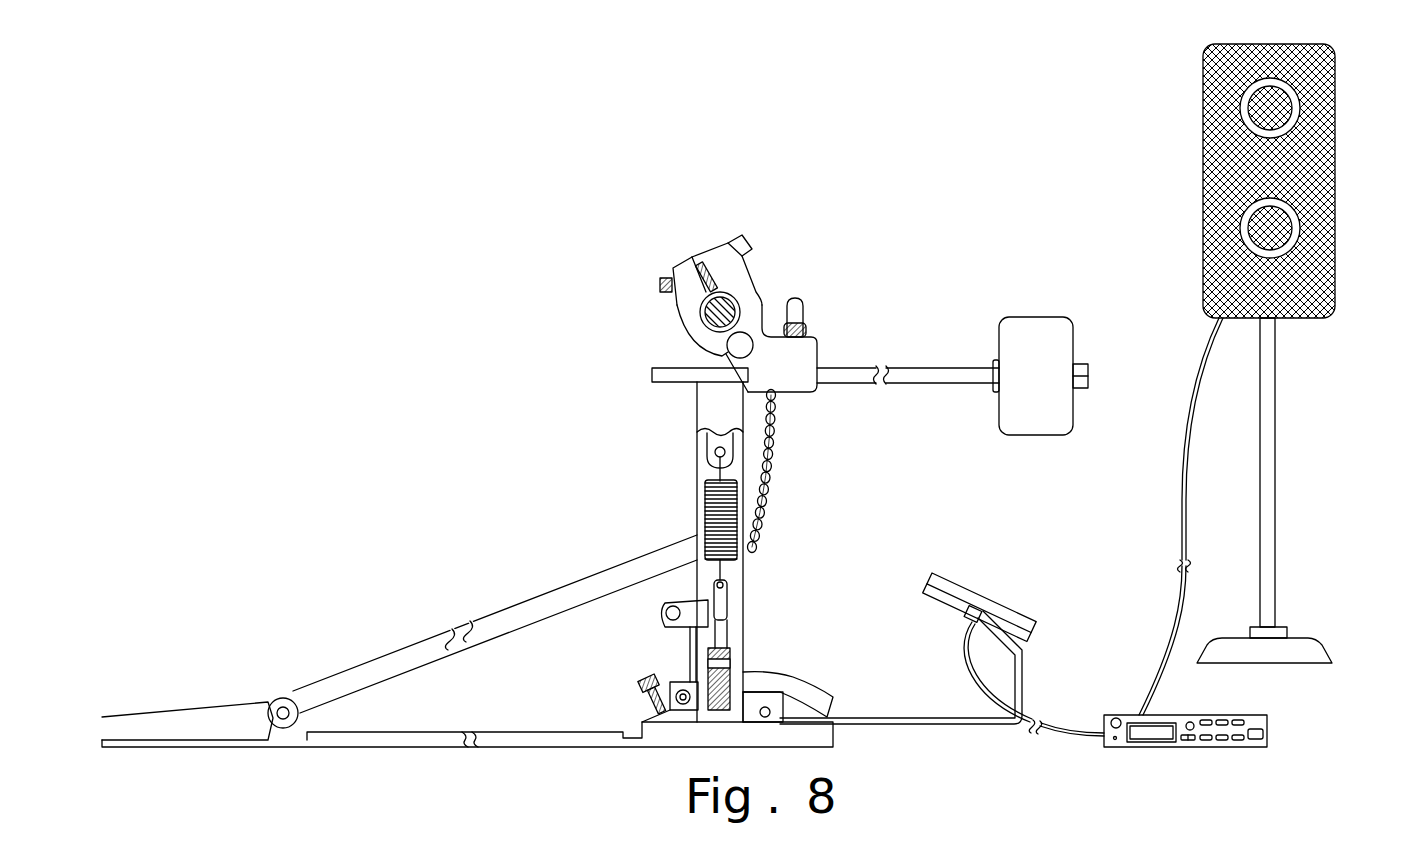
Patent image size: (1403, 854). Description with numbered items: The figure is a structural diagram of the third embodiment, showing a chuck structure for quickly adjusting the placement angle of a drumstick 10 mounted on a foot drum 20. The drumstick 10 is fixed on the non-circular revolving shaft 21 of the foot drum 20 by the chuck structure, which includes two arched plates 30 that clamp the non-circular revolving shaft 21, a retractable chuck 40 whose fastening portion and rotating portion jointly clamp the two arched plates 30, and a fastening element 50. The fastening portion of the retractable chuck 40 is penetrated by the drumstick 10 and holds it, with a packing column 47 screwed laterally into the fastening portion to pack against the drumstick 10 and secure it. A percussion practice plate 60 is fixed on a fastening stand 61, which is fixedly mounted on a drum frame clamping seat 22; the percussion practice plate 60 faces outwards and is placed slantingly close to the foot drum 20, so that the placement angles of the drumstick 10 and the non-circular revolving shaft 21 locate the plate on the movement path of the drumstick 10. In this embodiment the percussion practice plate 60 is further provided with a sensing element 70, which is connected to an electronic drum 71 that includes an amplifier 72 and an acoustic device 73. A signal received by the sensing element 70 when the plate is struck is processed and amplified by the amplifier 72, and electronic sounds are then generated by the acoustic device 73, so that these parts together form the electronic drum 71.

The drumstick 10 is at (1030, 332).
The foot drum 20 is at (538, 578).
The non-circular revolving shaft 21 is at (700, 312).
The drum frame clamping seat 22 is at (765, 687).
The arched plates 30 is at (732, 294).
The retractable chuck 40 is at (792, 398).
The packing column 47 is at (796, 302).
The fastening element 50 is at (737, 250).
The percussion practice plate 60 is at (1020, 624).
The fastening stand 61 is at (890, 717).
The sensing element 70 is at (975, 612).
The electronic drum 71 is at (1248, 395).
The amplifier 72 is at (1258, 715).
The acoustic device 73 is at (1310, 320).